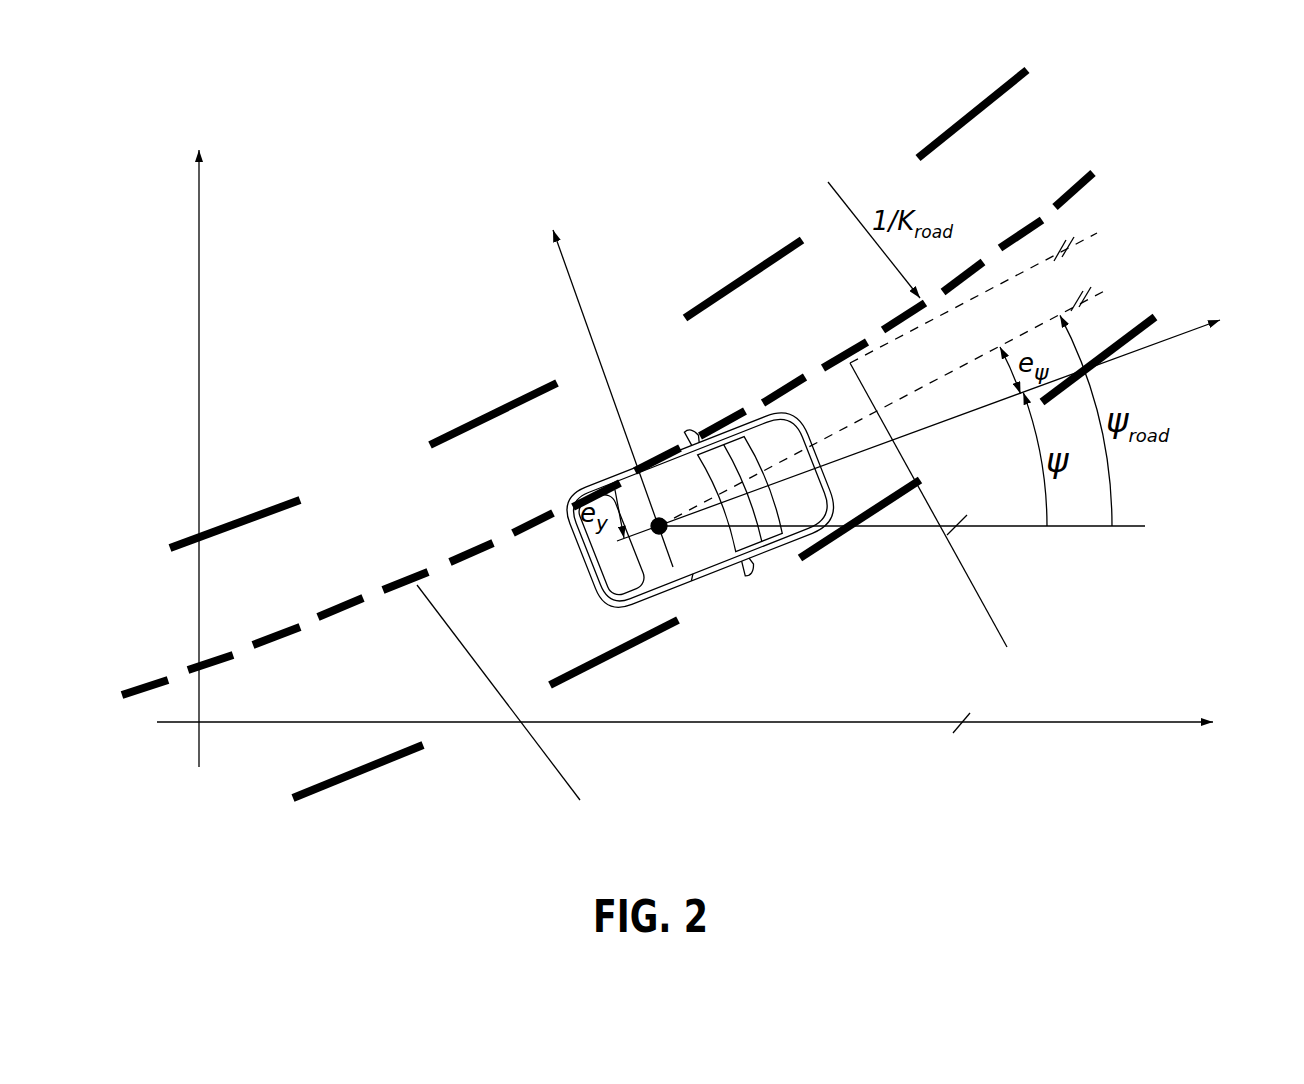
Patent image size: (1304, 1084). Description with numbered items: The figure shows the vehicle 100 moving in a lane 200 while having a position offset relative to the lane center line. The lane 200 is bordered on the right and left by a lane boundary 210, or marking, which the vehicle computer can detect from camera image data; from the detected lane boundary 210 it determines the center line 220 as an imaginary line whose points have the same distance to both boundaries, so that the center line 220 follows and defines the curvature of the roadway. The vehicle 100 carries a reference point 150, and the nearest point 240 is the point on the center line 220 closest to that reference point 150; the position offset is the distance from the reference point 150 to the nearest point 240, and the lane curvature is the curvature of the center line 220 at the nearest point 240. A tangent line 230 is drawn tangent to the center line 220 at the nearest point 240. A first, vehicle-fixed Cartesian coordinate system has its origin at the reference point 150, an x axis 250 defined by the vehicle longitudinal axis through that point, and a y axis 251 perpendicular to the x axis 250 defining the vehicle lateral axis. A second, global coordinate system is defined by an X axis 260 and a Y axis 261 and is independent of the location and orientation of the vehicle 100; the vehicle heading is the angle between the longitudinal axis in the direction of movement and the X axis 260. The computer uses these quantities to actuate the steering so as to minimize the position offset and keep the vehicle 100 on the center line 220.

The vehicle 100 is at (728, 568).
The reference point 150 is at (655, 540).
The lane 200 is at (302, 565).
The lane boundary 210 is at (243, 513).
The center line 220 is at (520, 707).
The tangent line 230 is at (944, 521).
The nearest point 240 is at (632, 468).
The x axis 250 is at (1193, 327).
The y axis 251 is at (587, 327).
The X axis 260 is at (933, 722).
The Y axis 261 is at (198, 337).